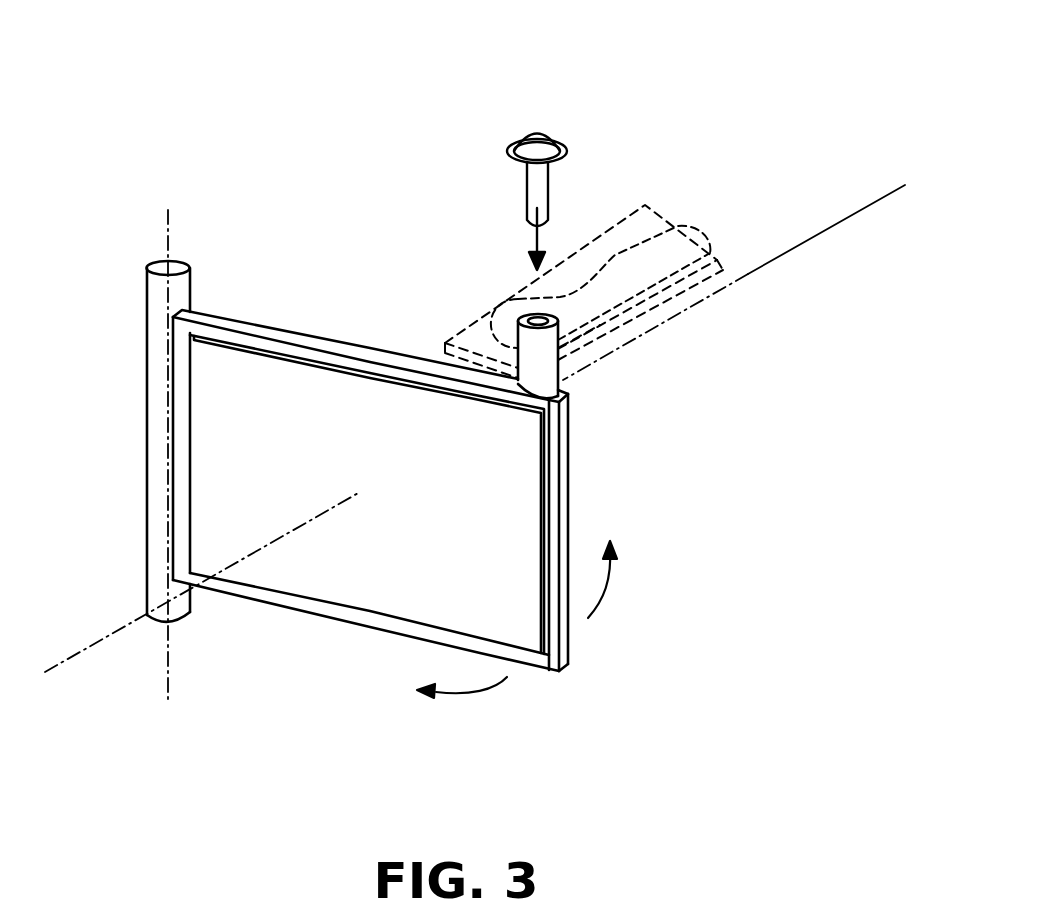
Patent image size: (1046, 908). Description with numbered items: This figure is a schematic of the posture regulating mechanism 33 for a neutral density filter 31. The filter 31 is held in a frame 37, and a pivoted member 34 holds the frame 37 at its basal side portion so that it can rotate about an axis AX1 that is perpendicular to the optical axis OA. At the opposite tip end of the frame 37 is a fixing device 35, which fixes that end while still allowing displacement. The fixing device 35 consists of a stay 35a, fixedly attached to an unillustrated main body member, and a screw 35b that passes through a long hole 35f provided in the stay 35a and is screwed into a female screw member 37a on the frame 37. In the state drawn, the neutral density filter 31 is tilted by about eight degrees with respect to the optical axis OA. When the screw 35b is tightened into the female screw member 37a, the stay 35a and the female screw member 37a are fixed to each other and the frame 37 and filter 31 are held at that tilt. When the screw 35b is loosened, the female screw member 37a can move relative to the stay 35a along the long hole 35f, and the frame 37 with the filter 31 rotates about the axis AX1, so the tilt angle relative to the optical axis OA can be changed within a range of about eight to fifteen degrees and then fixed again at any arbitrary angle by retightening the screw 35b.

The neutral density filter 31 is at (333, 398).
The posture regulating mechanism 33 is at (629, 204).
The pivoted member 34 is at (147, 306).
The fixing device 35 is at (614, 236).
The stay 35a is at (630, 312).
The screw 35b is at (537, 147).
The long hole 35f is at (680, 231).
The frame 37 is at (431, 444).
The female screw member 37a is at (562, 387).
The axis AX1 is at (169, 232).
The optical axis OA is at (760, 266).